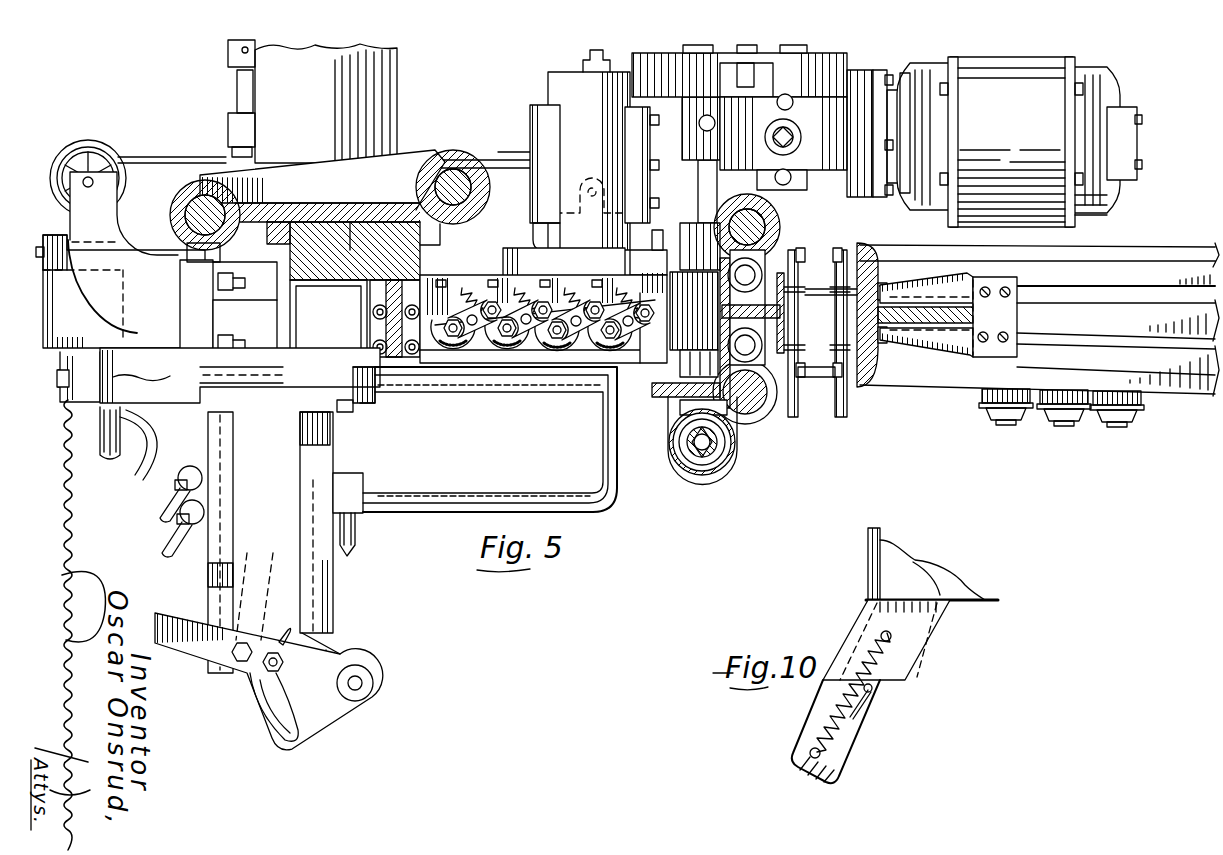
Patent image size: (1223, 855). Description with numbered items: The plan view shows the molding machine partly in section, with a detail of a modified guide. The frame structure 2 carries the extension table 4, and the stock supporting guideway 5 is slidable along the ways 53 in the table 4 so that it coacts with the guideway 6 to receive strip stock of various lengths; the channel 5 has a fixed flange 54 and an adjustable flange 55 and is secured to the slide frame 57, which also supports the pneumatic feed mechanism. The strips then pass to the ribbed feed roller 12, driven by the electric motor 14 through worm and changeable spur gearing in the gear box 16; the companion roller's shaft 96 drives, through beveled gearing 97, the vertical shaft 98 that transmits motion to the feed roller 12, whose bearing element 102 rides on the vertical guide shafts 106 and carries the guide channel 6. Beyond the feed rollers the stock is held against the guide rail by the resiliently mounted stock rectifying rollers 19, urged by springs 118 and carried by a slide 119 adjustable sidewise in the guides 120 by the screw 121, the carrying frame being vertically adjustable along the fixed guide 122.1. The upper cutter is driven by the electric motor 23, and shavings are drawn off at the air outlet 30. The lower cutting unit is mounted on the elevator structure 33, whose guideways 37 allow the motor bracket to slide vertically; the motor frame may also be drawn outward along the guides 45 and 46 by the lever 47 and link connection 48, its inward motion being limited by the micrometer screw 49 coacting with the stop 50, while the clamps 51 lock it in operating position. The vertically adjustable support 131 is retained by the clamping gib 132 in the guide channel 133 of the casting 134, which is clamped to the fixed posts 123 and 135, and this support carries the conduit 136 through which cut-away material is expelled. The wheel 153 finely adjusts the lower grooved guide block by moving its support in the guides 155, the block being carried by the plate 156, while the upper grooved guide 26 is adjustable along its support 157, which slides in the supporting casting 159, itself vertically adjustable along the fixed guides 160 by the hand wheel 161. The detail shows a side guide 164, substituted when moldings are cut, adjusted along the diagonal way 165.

In FIG. 5, the frame structure 2 is at (503, 160).
In FIG. 5, the extension table 4 is at (1140, 246).
In FIG. 5, the stock supporting guideway 5 is at (856, 328).
In FIG. 5, the guideway 6 is at (786, 312).
In FIG. 5, the feed roller 12 is at (683, 320).
In FIG. 5, the electric motor 14 is at (990, 133).
In FIG. 5, the gear box 16 is at (786, 100).
In FIG. 5, the stock rectifying rollers 19 is at (485, 360).
In FIG. 5, the electric motor 23 is at (398, 62).
In FIG. 5, the upper grooved guide 26 is at (1090, 430).
In FIG. 5, the air outlet 30 is at (357, 530).
In FIG. 5, the elevator member 33 is at (622, 492).
In FIG. 5, the guideways 37 is at (356, 412).
In FIG. 5, the guide 45 is at (213, 455).
In FIG. 5, the guide 46 is at (333, 572).
In FIG. 5, the lever 47 is at (195, 650).
In FIG. 5, the link connection 48 is at (243, 605).
In FIG. 5, the micrometer screw 49 is at (242, 68).
In FIG. 5, the stop 50 is at (232, 95).
In FIG. 5, the clamps 51 is at (178, 510).
In FIG. 5, the ways 53 is at (1185, 345).
In FIG. 5, the fixed flange 54 is at (820, 332).
In FIG. 5, the adjustable flange 55 is at (830, 380).
In FIG. 5, the slide frame 57 is at (1017, 315).
In FIG. 5, the shaft 96 is at (698, 190).
In FIG. 5, the beveled gearing 97 is at (660, 445).
In FIG. 5, the vertical shaft 98 is at (738, 458).
In FIG. 5, the bearing element 102 is at (665, 398).
In FIG. 5, the vertical guide shafts 106 is at (772, 226).
In FIG. 5, the springs 118 is at (565, 290).
In FIG. 5, the slide 119 is at (545, 96).
In FIG. 5, the guides 120 is at (553, 175).
In FIG. 5, the screw 121 is at (580, 56).
In FIG. 5, the fixed guide 122.1 is at (532, 232).
In FIG. 5, the fixed post 123 is at (440, 160).
In FIG. 5, the support 131 is at (327, 229).
In FIG. 5, the clamping gib 132 is at (265, 248).
In FIG. 5, the guide channel 133 is at (375, 212).
In FIG. 5, the casting 134 is at (305, 178).
In FIG. 5, the fixed post 135 is at (190, 180).
In FIG. 5, the conduit 136 is at (300, 328).
In FIG. 5, the wheel 153 is at (150, 432).
In FIG. 5, the guides 155 is at (90, 400).
In FIG. 5, the plate 156 is at (120, 291).
In FIG. 5, the support 157 is at (228, 308).
In FIG. 10, the support 157 is at (866, 565).
In FIG. 5, the supporting casting 159 is at (95, 298).
In FIG. 5, the fixed guides 160 is at (65, 232).
In FIG. 5, the hand wheel 161 is at (80, 138).
In FIG. 10, the side guide 164 is at (970, 570).
In FIG. 10, the diagonal way 165 is at (915, 665).